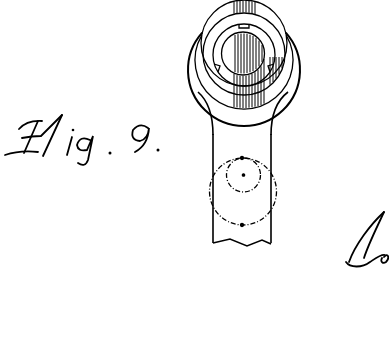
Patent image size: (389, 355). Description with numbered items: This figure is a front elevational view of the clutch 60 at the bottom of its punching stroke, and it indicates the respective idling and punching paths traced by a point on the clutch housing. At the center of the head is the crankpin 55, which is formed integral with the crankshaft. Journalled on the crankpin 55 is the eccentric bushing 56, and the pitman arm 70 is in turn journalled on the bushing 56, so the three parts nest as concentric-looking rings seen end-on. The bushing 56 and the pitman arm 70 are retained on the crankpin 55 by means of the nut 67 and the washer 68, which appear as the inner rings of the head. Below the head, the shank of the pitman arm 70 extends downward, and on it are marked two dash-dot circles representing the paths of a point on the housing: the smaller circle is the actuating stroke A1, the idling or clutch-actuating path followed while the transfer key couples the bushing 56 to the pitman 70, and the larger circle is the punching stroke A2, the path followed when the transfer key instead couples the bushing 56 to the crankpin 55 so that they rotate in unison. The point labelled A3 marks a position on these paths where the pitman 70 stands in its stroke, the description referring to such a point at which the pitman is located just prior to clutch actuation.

The crankpin 55 is at (230, 43).
The nut 67 is at (214, 53).
The washer 68 is at (205, 66).
The eccentric bushing 56 is at (206, 85).
The pitman arm 70 is at (302, 57).
The clutch 60 is at (299, 101).
The actuating stroke A1 is at (231, 188).
The punching stroke A2 is at (242, 225).
The point A3 is at (243, 158).